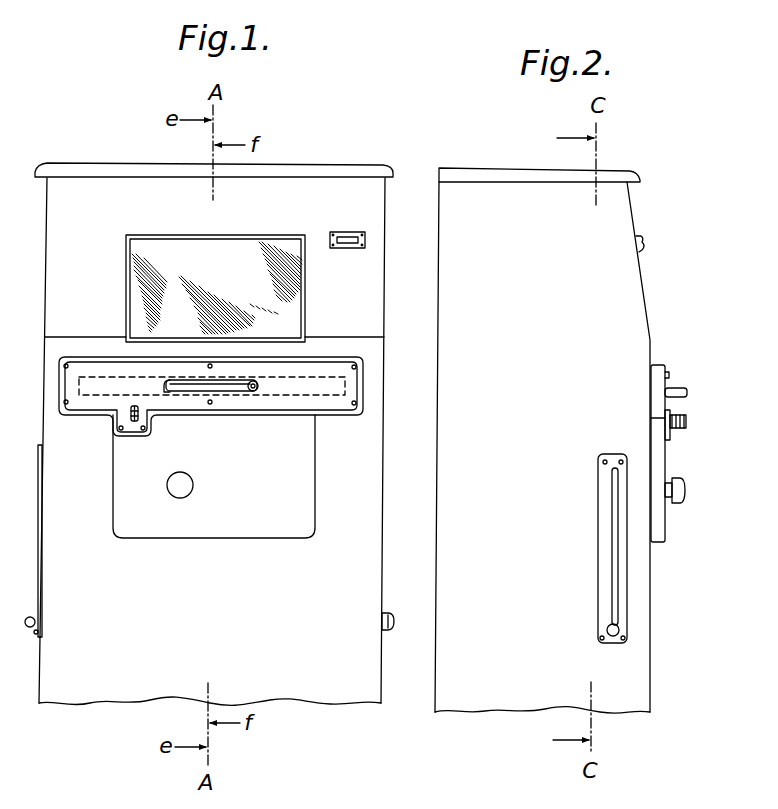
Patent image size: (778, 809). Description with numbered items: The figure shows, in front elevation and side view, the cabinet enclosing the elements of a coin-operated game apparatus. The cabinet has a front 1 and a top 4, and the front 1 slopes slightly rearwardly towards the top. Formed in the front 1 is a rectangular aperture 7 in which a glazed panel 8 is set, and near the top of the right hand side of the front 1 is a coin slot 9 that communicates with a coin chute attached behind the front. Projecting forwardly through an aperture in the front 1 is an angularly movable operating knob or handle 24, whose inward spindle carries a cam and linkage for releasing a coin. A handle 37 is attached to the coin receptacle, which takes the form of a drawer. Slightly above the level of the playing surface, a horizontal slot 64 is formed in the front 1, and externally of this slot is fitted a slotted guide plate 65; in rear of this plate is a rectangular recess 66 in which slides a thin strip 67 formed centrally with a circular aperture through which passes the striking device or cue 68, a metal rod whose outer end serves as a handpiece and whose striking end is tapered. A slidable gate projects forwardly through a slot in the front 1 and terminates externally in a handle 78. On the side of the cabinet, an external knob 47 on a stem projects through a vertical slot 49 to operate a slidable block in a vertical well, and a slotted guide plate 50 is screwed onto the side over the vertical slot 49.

In FIG. 1, the front 1 is at (357, 502).
In FIG. 2, the front 1 is at (542, 447).
In FIG. 1, the top 4 is at (94, 168).
In FIG. 2, the top 4 is at (483, 178).
In FIG. 1, the rectangular aperture 7 is at (306, 287).
In FIG. 1, the glazed panel 8 is at (228, 268).
In FIG. 1, the coin slot 9 is at (345, 232).
In FIG. 1, the operating knob or handle 24 is at (167, 483).
In FIG. 2, the operating knob or handle 24 is at (679, 500).
In FIG. 1, the handle 37 is at (392, 626).
In FIG. 1, the external knob 47 is at (35, 620).
In FIG. 2, the external knob 47 is at (618, 629).
In FIG. 2, the vertical slot 49 is at (617, 570).
In FIG. 1, the slotted guide plate 50 is at (42, 490).
In FIG. 2, the slotted guide plate 50 is at (605, 548).
In FIG. 1, the horizontal slot 64 is at (193, 384).
In FIG. 1, the slotted guide plate 65 is at (105, 373).
In FIG. 2, the slotted guide plate 65 is at (668, 372).
In FIG. 1, the rectangular recess 66 is at (103, 385).
In FIG. 1, the strip 67 is at (166, 395).
In FIG. 1, the striking device or cue 68 is at (254, 393).
In FIG. 2, the striking device or cue 68 is at (678, 390).
In FIG. 1, the handle 78 is at (135, 423).
In FIG. 2, the handle 78 is at (681, 429).